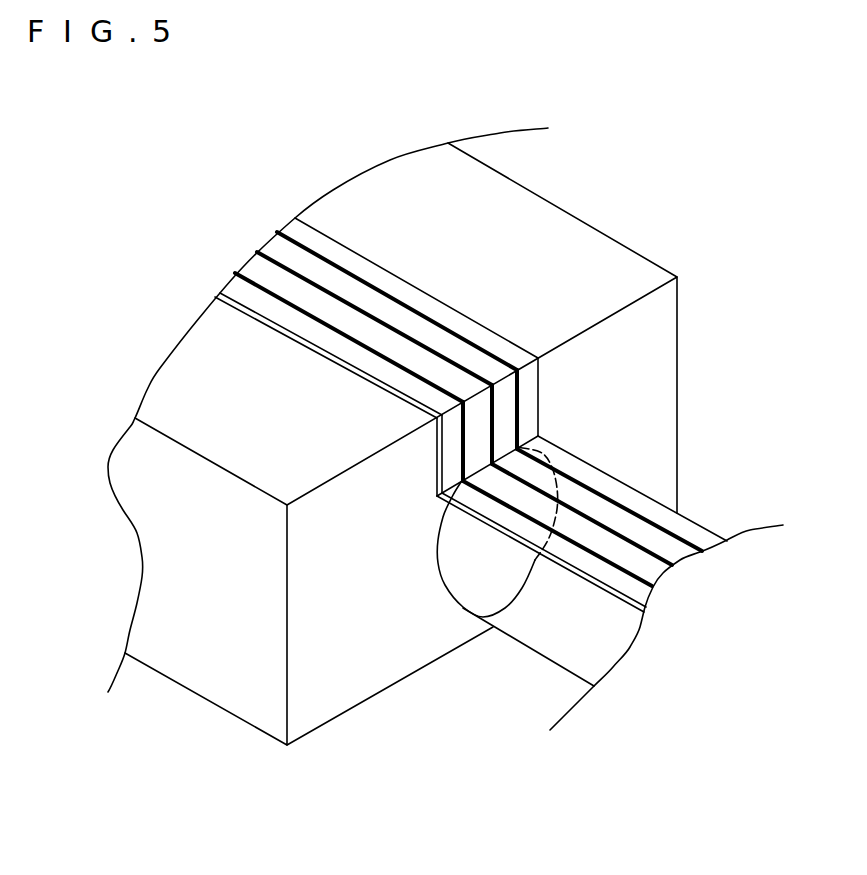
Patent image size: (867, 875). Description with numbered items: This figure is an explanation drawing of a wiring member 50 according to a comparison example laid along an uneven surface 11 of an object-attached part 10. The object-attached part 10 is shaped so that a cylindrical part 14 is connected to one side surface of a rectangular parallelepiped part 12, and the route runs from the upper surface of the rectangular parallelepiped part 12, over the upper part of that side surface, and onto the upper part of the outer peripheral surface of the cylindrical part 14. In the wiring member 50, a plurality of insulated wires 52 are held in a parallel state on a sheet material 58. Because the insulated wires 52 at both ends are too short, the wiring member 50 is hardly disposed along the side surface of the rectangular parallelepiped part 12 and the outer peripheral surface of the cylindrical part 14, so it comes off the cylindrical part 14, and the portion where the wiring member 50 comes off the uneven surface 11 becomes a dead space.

The object-attached part 10 is at (592, 193).
The uneven surface 11 is at (630, 251).
The rectangular parallelepiped part 12 is at (190, 697).
The cylindrical part 14 is at (570, 673).
The wiring member 50 is at (460, 305).
The insulated wires 52 is at (390, 362).
The sheet material 58 is at (508, 340).